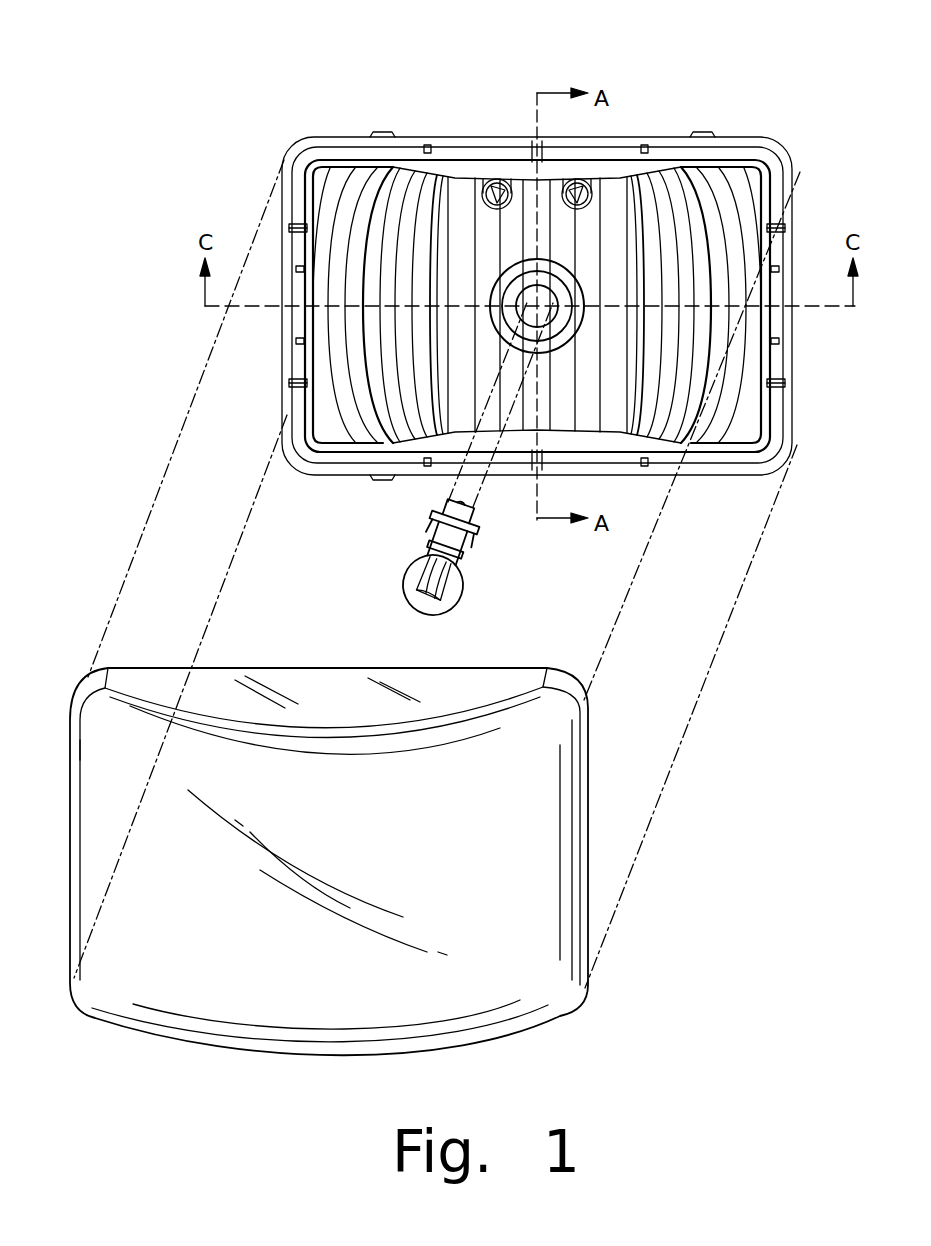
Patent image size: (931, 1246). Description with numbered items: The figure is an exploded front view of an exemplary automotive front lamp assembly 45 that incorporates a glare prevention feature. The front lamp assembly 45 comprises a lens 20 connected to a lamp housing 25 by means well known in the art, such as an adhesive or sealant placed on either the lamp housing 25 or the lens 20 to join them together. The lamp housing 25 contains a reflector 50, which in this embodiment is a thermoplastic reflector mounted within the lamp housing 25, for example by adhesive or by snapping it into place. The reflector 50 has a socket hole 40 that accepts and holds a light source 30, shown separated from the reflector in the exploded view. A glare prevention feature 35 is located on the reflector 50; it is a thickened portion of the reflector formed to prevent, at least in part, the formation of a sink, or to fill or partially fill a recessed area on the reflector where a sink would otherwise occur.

The front lamp assembly 45 is at (312, 84).
The lamp housing 25 is at (793, 418).
The reflector 50 is at (722, 400).
The glare prevention feature 35 is at (583, 302).
The socket hole 40 is at (553, 288).
The light source 30 is at (463, 586).
The lens 20 is at (563, 1012).